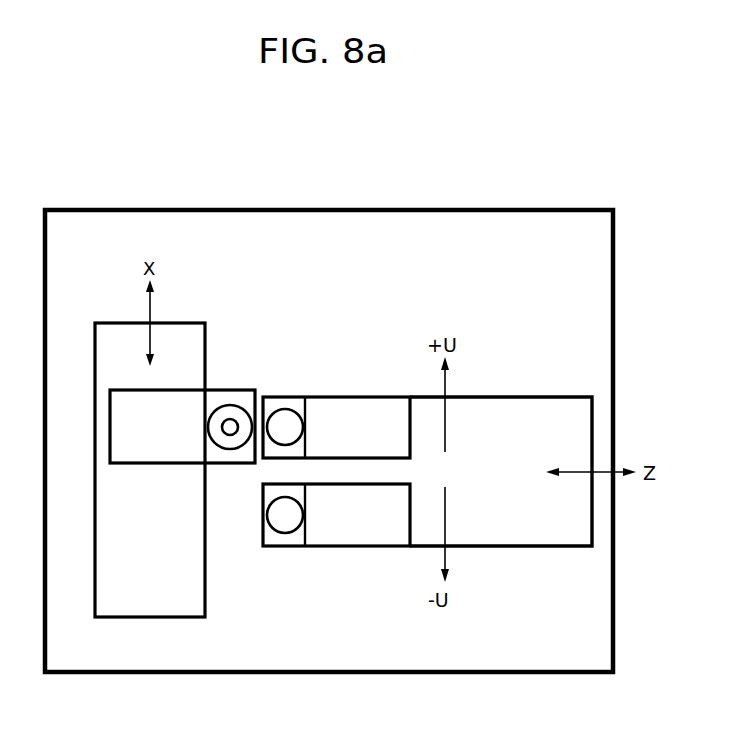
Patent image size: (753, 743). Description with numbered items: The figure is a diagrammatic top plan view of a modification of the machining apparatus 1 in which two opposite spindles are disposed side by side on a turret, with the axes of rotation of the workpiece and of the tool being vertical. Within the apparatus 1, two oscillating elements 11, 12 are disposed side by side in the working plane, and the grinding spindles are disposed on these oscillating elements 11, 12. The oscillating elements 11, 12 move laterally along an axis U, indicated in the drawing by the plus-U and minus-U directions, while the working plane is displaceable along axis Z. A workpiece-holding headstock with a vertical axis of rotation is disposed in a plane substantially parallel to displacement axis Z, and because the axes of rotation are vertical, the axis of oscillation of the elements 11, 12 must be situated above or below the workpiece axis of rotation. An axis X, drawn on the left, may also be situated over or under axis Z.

The frame / housing 1 is at (618, 535).
The oscillating element 11 is at (364, 423).
The oscillating element 12 is at (353, 517).